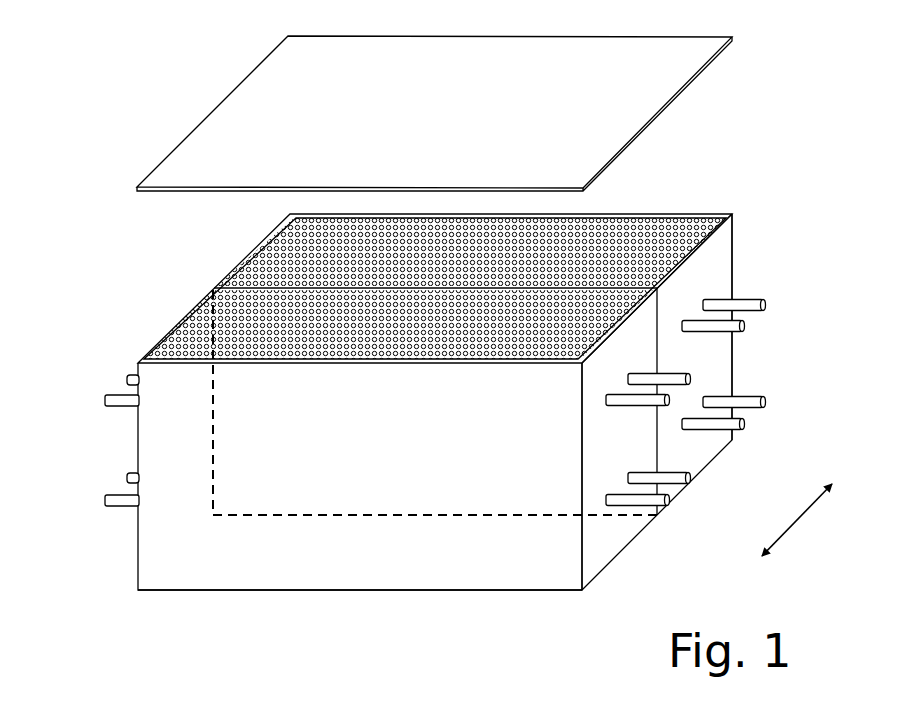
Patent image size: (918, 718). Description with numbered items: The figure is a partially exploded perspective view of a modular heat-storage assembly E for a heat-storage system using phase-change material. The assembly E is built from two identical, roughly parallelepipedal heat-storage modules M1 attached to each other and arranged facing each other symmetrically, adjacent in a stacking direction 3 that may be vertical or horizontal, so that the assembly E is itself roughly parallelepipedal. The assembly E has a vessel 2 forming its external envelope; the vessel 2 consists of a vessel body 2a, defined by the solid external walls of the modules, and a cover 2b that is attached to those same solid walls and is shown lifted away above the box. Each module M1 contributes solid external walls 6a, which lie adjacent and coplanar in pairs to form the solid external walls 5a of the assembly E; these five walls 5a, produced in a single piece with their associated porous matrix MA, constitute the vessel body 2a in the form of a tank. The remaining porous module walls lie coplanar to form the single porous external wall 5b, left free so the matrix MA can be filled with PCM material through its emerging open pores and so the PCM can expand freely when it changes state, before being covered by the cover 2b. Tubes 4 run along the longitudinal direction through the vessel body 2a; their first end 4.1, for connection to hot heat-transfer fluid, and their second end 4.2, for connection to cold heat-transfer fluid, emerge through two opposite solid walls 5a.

The modular heat-storage assembly E is at (105, 218).
The vessel 2 is at (173, 528).
The vessel body 2a is at (350, 563).
The cover 2b is at (243, 110).
The stacking direction 3 is at (797, 525).
The tubes 4 is at (757, 397).
The first end of the tubes 4.1 is at (128, 380).
The second end of the tubes 4.2 is at (742, 326).
The solid external walls of the assembly 5a is at (170, 552).
The porous external wall of the assembly 5b is at (680, 213).
The solid external walls of the modules 6a is at (262, 246).
The porous matrix MA is at (233, 320).
The heat-storage module M1 is at (203, 266).